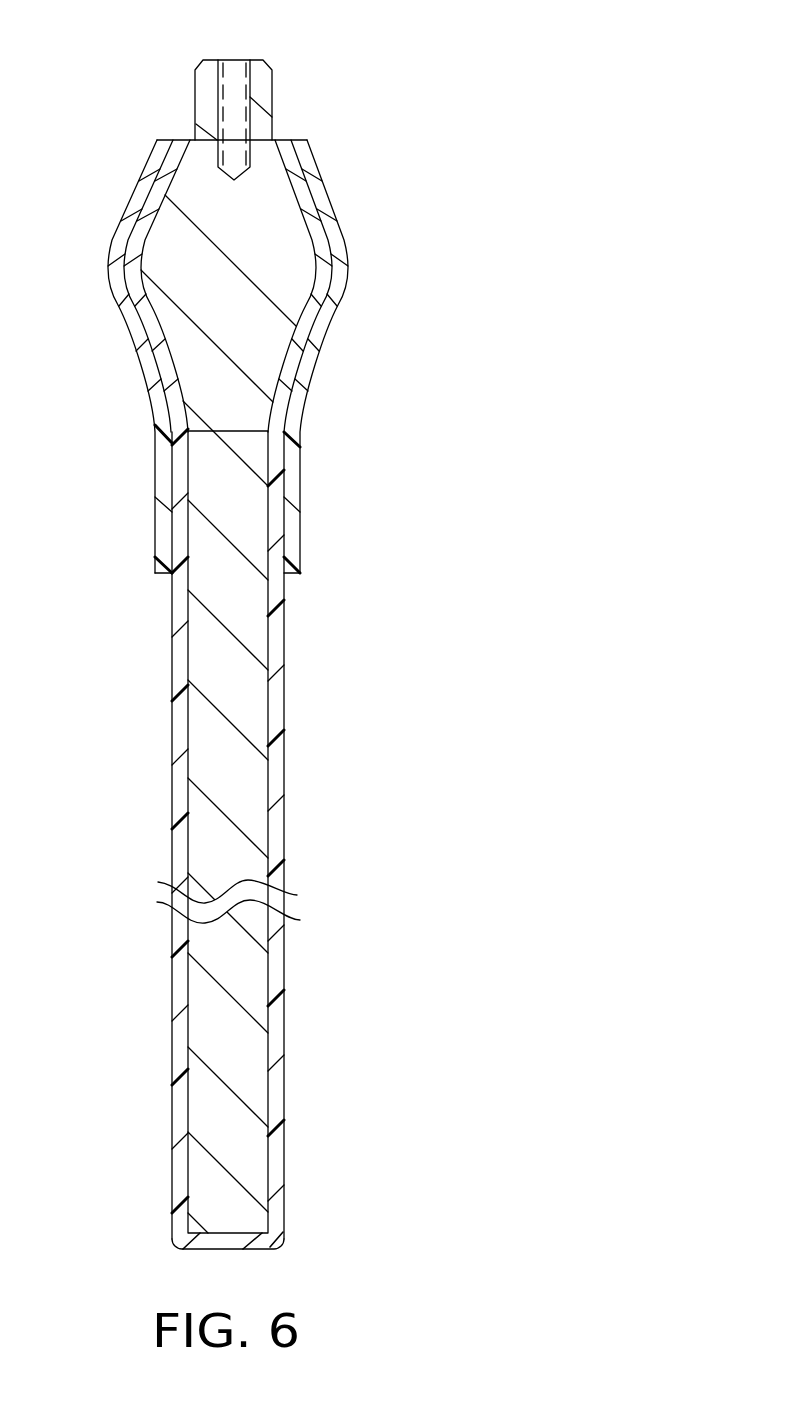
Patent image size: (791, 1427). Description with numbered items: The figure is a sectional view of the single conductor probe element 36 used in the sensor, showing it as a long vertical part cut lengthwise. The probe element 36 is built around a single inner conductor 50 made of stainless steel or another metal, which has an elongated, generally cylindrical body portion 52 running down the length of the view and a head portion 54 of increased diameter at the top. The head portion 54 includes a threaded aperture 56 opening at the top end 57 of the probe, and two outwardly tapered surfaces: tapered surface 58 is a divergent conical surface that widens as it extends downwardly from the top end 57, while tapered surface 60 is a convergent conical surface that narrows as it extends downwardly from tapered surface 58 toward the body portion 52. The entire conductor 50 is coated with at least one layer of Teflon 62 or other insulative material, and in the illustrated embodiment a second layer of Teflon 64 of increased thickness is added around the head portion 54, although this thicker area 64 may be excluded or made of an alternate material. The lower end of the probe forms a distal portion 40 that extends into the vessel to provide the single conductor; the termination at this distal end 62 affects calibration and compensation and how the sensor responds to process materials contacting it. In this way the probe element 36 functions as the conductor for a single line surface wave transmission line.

The probe element 36 is at (435, 302).
The distal portion 40 is at (320, 1198).
The inner conductor 50 is at (200, 820).
The body portion 52 is at (237, 783).
The head portion 54 is at (257, 223).
The threaded aperture 56 is at (243, 77).
The top end 57 is at (176, 62).
The tapered surface 58 is at (303, 218).
The tapered surface 60 is at (305, 335).
The layer of Teflon 62 is at (158, 1148).
The second layer of Teflon 64 is at (95, 260).